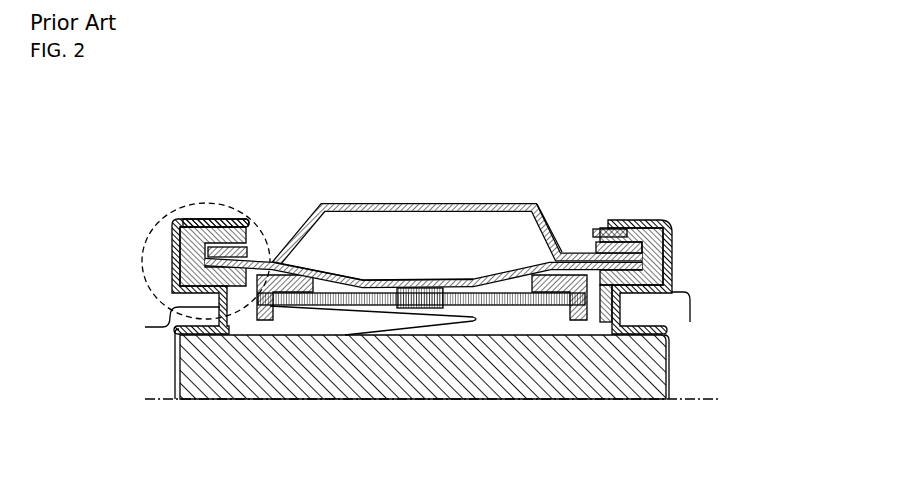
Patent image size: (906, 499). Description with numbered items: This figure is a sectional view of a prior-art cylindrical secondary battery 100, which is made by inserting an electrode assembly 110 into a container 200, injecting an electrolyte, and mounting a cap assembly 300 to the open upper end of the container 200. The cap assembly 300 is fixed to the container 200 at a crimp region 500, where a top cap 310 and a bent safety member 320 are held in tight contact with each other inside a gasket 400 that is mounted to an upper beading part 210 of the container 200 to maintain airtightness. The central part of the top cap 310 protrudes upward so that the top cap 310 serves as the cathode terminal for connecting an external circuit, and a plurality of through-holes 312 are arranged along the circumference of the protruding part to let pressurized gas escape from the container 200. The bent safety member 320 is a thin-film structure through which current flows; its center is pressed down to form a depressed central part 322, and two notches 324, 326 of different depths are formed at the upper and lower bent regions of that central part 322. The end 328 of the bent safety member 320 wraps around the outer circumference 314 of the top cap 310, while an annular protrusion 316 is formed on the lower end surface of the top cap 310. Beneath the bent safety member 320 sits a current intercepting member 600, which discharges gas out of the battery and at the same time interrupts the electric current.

The cylindrical secondary battery 100 is at (63, 121).
The electrode assembly 110 is at (467, 383).
The container 200 is at (451, 403).
The upper beading part 210 is at (145, 327).
The cap assembly 300 is at (768, 218).
The top cap 310 is at (453, 205).
The through-holes 312 is at (540, 208).
The outer circumference 314 is at (670, 248).
The annular protrusion 316 is at (672, 286).
The bent safety member 320 is at (275, 258).
The depressed central part 322 is at (408, 278).
The notch 324 is at (552, 262).
The notch 326 is at (314, 263).
The end of the bent safety member 328 is at (635, 220).
The gasket 400 is at (241, 212).
The crimp region 500 is at (157, 242).
The current intercepting member 600 is at (350, 306).